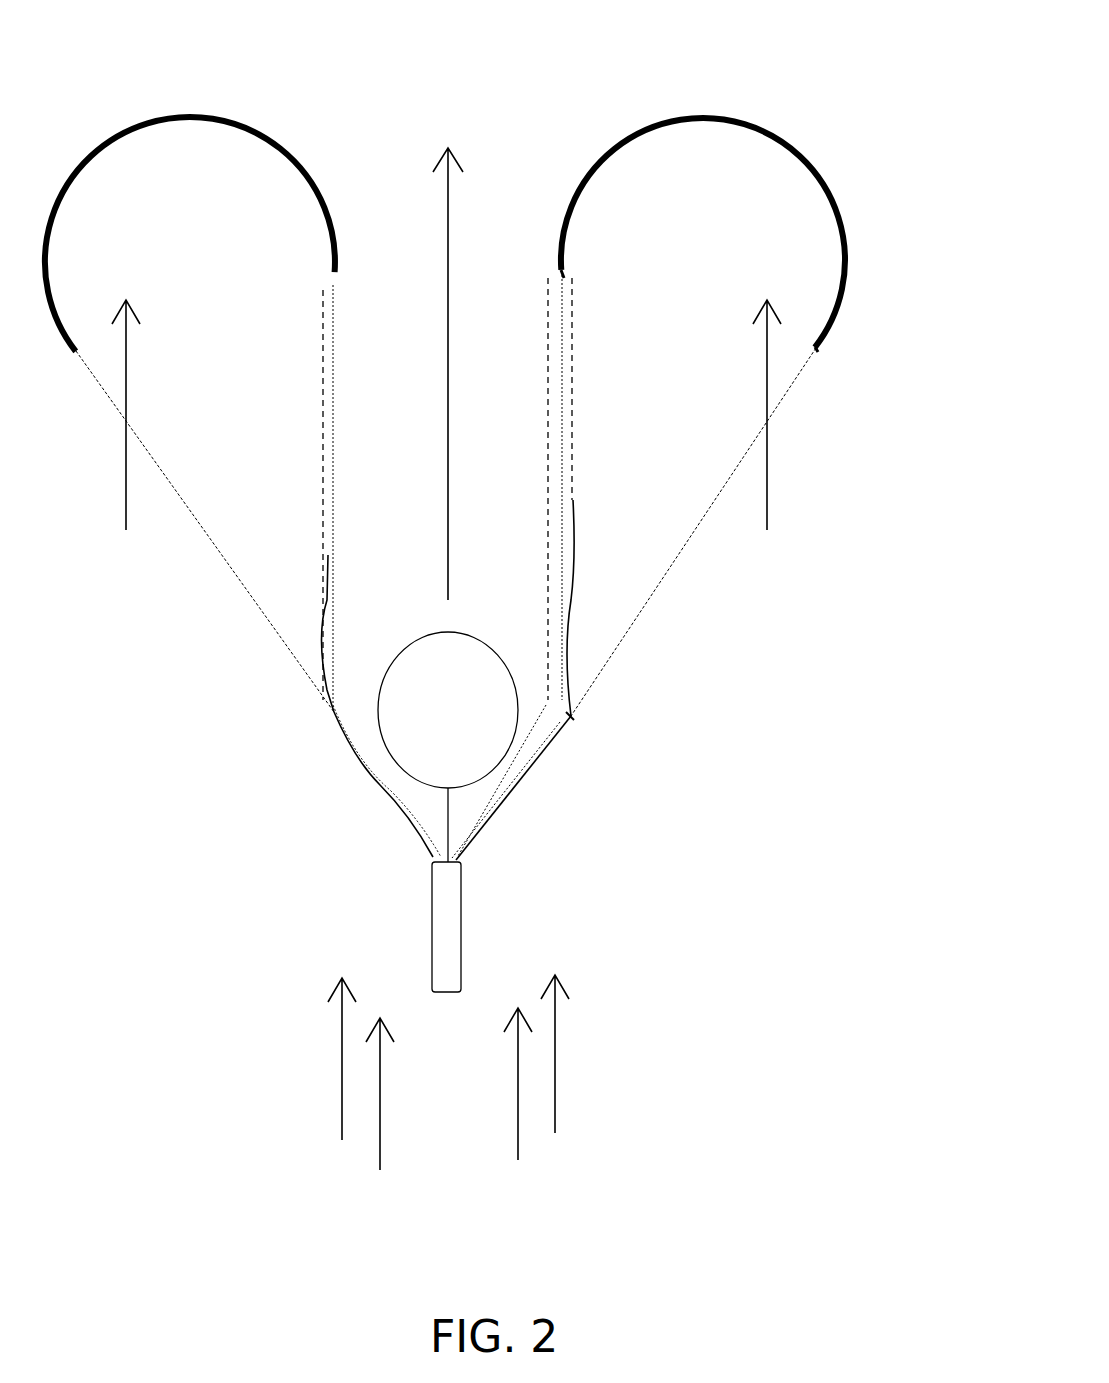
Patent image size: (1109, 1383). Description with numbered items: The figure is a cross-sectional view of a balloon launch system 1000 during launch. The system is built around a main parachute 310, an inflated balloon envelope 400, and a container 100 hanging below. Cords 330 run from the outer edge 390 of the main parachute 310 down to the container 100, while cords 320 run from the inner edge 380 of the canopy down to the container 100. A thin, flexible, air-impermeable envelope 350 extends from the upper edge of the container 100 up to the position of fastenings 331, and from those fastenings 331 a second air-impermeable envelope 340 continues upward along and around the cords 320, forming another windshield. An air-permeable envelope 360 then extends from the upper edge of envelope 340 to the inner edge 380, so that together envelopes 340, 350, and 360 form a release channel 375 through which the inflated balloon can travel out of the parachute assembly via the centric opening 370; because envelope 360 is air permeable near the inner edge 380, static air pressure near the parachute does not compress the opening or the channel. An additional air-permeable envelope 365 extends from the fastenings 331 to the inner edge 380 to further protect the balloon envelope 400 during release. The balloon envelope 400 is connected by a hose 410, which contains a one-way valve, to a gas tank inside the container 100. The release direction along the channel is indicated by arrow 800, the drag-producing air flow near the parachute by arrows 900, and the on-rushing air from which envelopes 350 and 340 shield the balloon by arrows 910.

The balloon launch system 1000 is at (176, 42).
The container 100 is at (462, 949).
The main parachute 310 is at (835, 186).
The cords 320 is at (560, 491).
The cords 330 is at (665, 570).
The fastenings 331 is at (576, 720).
The envelope 340 is at (575, 607).
The envelope 350 is at (520, 790).
The envelope 360 is at (573, 364).
The envelope 365 is at (540, 352).
The centric opening 370 is at (360, 205).
The release channel 375 is at (398, 562).
The inner edge 380 is at (565, 271).
The outer edge 390 is at (822, 353).
The balloon envelope 400 is at (385, 742).
The hose 410 is at (447, 808).
The arrow 800 is at (416, 374).
The arrows 900 is at (448, 415).
The arrows 910 is at (447, 1086).